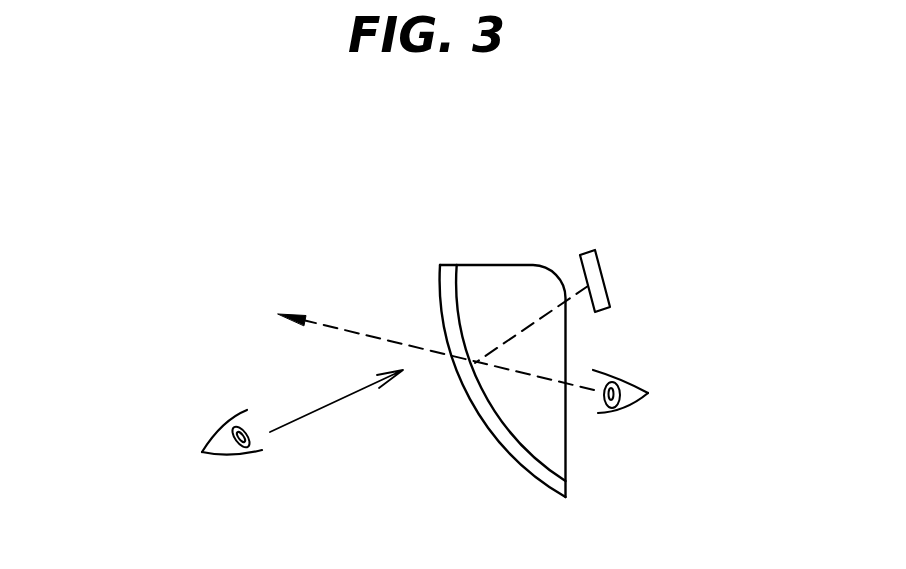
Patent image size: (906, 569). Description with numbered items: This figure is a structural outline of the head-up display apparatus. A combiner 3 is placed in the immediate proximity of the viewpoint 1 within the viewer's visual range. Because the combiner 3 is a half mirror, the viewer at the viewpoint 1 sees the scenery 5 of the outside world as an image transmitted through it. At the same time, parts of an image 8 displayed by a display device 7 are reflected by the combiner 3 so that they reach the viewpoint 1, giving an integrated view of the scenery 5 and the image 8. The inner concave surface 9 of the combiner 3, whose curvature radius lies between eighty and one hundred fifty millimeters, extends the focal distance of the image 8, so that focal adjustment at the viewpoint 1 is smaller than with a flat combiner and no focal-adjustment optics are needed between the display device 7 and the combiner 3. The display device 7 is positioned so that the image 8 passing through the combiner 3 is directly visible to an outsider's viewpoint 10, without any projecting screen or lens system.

The viewpoint 1 is at (643, 387).
The combiner 3 is at (485, 423).
The scenery 5 is at (185, 300).
The display device 7 is at (610, 290).
The image 8 is at (578, 257).
The inner concave surface 9 is at (460, 297).
The outsider's viewpoint 10 is at (203, 450).